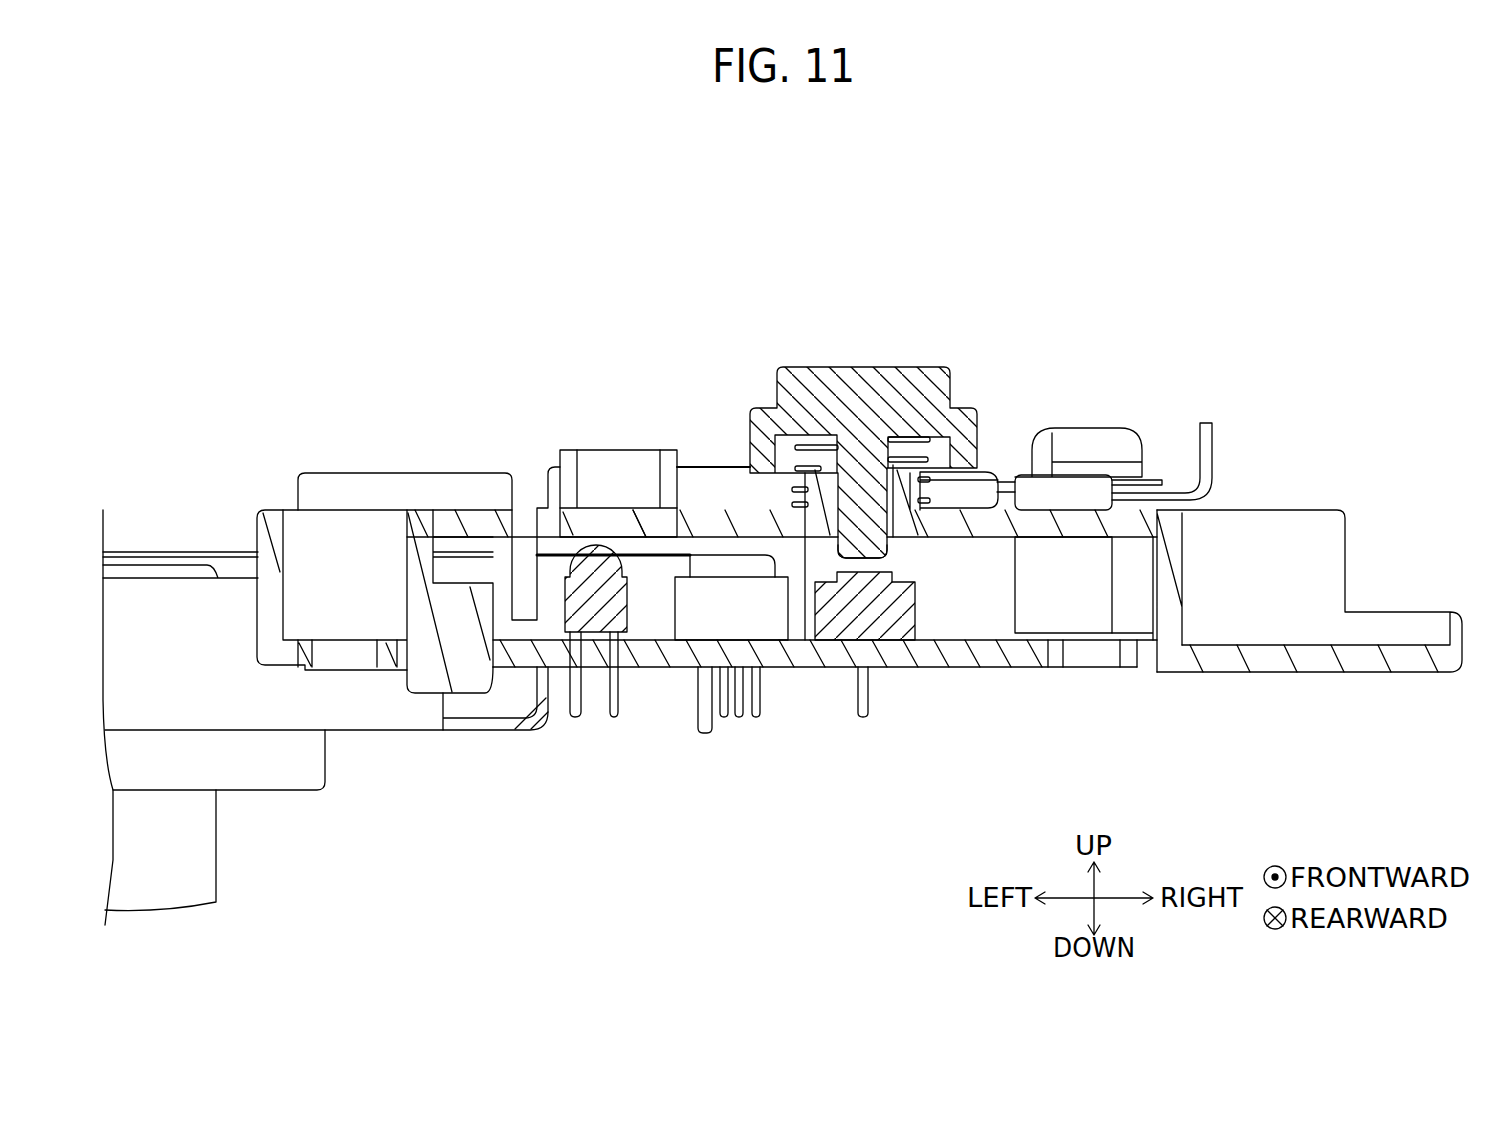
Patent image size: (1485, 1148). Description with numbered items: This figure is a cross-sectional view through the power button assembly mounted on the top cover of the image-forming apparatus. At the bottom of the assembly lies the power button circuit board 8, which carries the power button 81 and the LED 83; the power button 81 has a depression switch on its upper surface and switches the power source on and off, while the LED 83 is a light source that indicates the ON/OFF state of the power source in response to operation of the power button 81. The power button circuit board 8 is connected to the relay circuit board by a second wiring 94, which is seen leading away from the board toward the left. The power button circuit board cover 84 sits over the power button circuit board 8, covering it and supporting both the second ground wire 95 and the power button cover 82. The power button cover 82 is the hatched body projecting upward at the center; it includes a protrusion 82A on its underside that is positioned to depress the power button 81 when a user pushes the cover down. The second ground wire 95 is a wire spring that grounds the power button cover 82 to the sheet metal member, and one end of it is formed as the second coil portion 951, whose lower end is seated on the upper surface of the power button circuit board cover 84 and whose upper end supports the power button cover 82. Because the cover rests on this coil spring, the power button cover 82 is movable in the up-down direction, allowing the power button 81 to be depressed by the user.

The power button circuit board 8 is at (1029, 681).
The power button 81 is at (913, 618).
The power button cover 82 is at (947, 367).
The protrusion 82A is at (865, 560).
The LED 83 is at (630, 612).
The power button circuit board cover 84 is at (707, 507).
The second wiring 94 is at (174, 550).
The second ground wire 95 is at (909, 470).
The second coil portion 951 is at (812, 445).